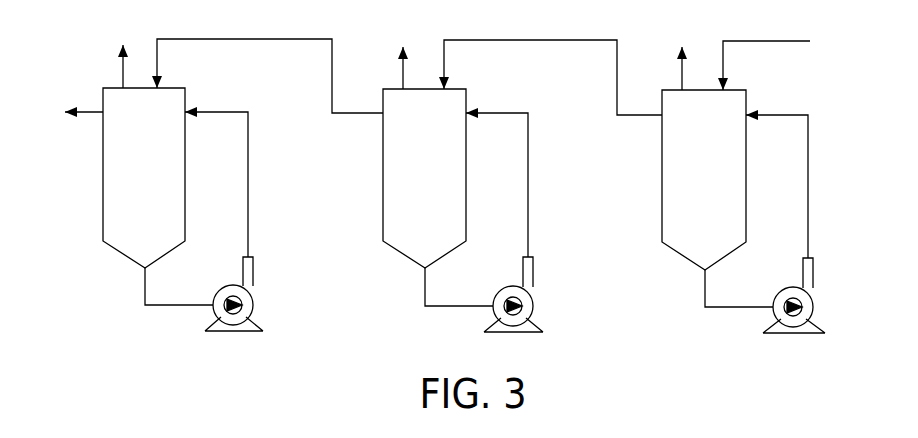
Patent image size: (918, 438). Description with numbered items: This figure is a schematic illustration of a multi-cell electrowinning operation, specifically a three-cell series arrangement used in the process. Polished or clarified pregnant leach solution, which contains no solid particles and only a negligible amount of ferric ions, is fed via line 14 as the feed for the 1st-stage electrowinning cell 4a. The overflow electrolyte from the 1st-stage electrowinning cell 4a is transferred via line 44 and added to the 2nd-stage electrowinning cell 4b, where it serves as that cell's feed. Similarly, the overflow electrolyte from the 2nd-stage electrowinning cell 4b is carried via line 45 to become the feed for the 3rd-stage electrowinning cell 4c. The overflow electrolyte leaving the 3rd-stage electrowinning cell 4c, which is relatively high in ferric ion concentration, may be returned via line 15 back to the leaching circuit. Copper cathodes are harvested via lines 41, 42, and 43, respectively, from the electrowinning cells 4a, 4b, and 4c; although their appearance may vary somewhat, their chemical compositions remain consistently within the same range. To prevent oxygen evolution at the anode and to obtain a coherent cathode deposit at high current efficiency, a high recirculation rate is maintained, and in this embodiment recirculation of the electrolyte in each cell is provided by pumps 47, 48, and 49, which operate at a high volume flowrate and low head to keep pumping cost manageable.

The 1st-stage electrowinning cell 4a is at (688, 197).
The 2nd-stage electrowinning cell 4b is at (443, 195).
The 3rd-stage electrowinning cell 4c is at (127, 194).
The line 14 is at (810, 52).
The line 15 is at (32, 123).
The line 41 is at (667, 42).
The line 42 is at (388, 40).
The line 43 is at (136, 40).
The line 44 is at (525, 40).
The line 45 is at (233, 39).
The pump 47 is at (253, 301).
The pump 48 is at (533, 302).
The pump 49 is at (813, 303).